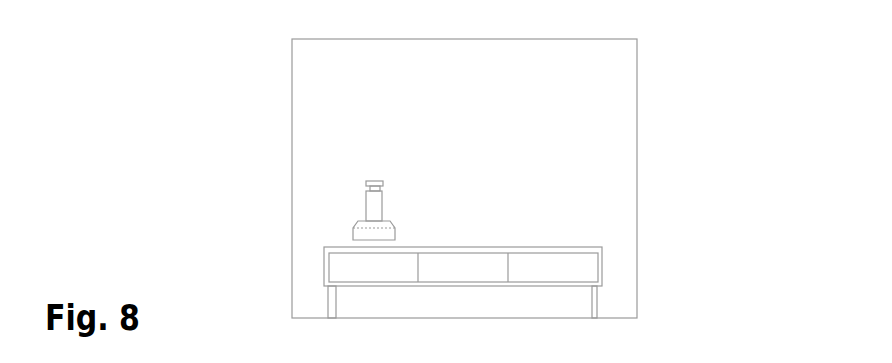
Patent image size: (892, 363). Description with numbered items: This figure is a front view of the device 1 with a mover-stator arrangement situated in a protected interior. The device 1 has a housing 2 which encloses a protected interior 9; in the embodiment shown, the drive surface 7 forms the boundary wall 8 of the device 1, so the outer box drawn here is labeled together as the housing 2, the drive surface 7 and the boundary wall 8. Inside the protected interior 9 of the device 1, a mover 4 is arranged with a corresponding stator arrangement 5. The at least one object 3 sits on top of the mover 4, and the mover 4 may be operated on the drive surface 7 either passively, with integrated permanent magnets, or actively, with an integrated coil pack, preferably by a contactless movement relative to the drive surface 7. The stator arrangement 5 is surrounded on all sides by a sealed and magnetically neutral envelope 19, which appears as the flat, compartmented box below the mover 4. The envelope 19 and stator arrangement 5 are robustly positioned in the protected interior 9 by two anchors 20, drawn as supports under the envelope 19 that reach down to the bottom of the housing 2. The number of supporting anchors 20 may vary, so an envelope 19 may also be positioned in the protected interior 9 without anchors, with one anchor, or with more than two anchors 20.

The device 1 is at (659, 73).
The housing 2 is at (391, 178).
The drive surface 7 is at (391, 178).
The boundary wall 8 is at (292, 105).
The protected interior 9 is at (608, 151).
The object 3 is at (374, 202).
The mover 4 is at (368, 234).
The stator arrangement 5 is at (493, 270).
The envelope 19 is at (598, 259).
The anchors 20 is at (597, 307).